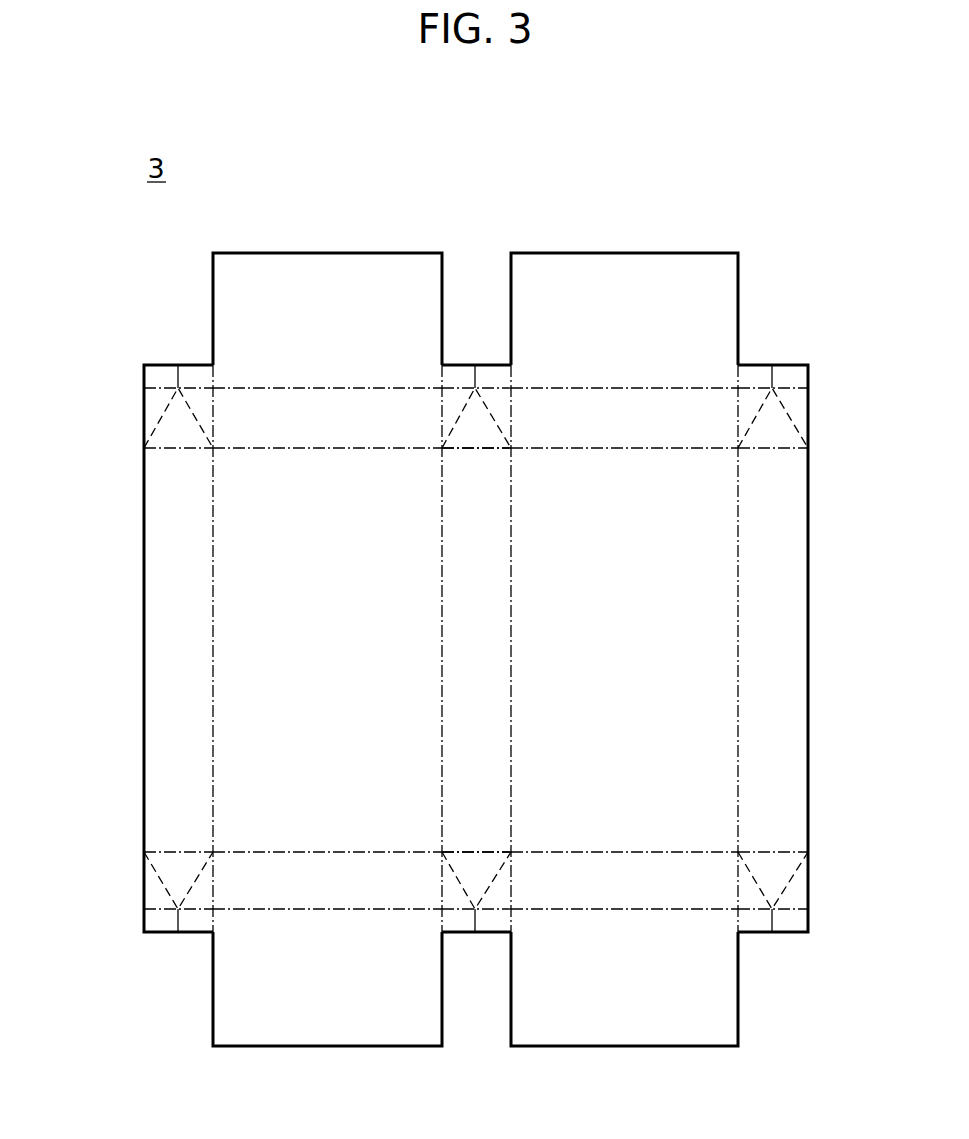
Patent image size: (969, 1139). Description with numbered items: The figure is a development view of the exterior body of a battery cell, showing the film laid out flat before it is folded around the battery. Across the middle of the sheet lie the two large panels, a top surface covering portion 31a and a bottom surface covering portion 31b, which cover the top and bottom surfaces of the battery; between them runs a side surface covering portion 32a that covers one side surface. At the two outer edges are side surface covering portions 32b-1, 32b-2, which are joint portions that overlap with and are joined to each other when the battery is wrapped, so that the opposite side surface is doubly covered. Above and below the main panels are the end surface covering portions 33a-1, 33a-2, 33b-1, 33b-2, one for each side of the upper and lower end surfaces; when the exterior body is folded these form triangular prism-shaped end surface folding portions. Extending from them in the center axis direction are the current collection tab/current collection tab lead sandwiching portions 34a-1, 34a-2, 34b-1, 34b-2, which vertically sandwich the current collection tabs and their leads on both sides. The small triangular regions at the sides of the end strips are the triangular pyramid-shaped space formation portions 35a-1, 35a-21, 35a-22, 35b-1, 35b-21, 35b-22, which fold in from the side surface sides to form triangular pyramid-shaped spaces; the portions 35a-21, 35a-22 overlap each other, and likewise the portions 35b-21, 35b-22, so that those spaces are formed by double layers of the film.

The top surface covering portion 31a is at (283, 663).
The bottom surface covering portion 31b is at (675, 660).
The side surface covering portion 32a is at (473, 710).
The side surface covering portion 32b-1 is at (182, 572).
The side surface covering portion 32b-2 is at (770, 572).
The end surface covering portion 33a-1 is at (296, 878).
The end surface covering portion 33a-2 is at (656, 878).
The end surface covering portion 33b-1 is at (296, 425).
The end surface covering portion 33b-2 is at (656, 425).
The current collection tab/current collection tab lead sandwiching portion 34a-1 is at (360, 960).
The current collection tab/current collection tab lead sandwiching portion 34a-2 is at (592, 960).
The current collection tab/current collection tab lead sandwiching portion 34b-1 is at (360, 340).
The current collection tab/current collection tab lead sandwiching portion 34b-2 is at (592, 340).
The triangular pyramid-shaped space formation portion 35a-1 is at (470, 865).
The triangular pyramid-shaped space formation portion 35a-21 is at (183, 874).
The triangular pyramid-shaped space formation portion 35a-22 is at (770, 874).
The triangular pyramid-shaped space formation portion 35b-1 is at (470, 432).
The triangular pyramid-shaped space formation portion 35b-21 is at (183, 424).
The triangular pyramid-shaped space formation portion 35b-22 is at (770, 424).